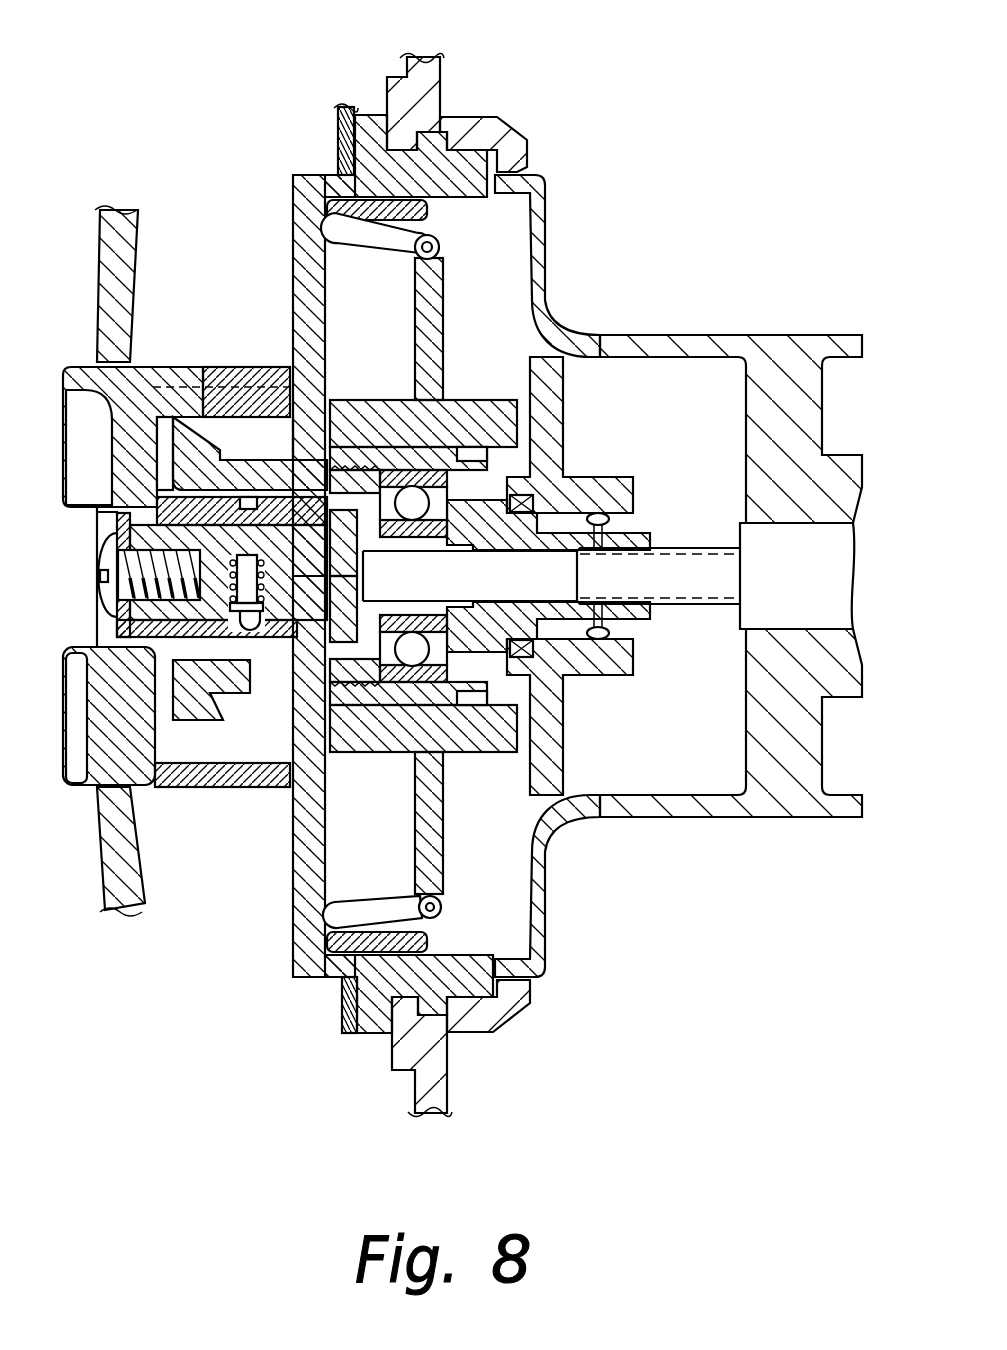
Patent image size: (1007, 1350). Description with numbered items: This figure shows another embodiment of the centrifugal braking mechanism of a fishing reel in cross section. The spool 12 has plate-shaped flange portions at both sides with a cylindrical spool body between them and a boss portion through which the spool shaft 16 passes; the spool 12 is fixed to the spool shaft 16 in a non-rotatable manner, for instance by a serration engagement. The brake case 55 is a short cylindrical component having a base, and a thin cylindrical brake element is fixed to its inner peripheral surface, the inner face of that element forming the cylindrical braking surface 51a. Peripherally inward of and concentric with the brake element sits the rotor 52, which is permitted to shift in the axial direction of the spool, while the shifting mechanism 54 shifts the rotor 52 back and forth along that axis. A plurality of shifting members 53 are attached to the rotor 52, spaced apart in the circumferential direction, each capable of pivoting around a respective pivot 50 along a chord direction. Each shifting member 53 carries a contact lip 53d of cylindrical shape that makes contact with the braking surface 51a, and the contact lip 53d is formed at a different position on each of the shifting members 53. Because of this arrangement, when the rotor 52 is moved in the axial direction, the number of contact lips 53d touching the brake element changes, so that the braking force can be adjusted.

The spool 12 is at (740, 338).
The spool shaft 16 is at (683, 567).
The pivot 50 is at (440, 242).
The braking surface 51a is at (428, 948).
The rotor 52 is at (565, 420).
The shifting members 53 is at (380, 247).
The contact lip 53d is at (311, 177).
The shifting mechanism 54 is at (243, 366).
The brake case 55 is at (293, 252).